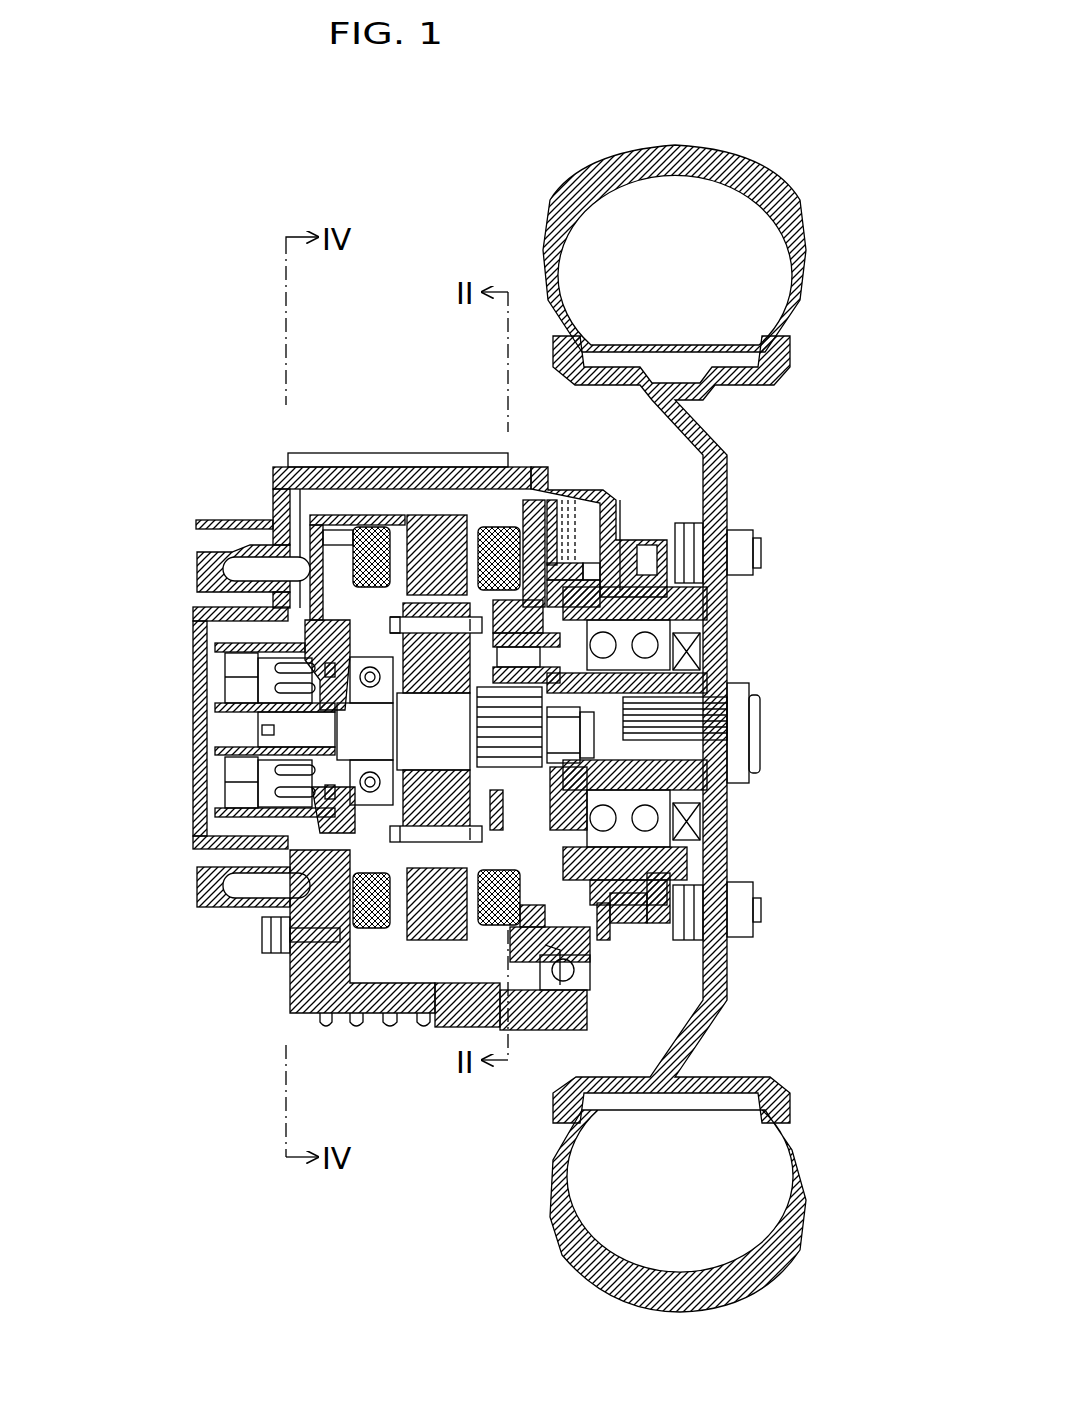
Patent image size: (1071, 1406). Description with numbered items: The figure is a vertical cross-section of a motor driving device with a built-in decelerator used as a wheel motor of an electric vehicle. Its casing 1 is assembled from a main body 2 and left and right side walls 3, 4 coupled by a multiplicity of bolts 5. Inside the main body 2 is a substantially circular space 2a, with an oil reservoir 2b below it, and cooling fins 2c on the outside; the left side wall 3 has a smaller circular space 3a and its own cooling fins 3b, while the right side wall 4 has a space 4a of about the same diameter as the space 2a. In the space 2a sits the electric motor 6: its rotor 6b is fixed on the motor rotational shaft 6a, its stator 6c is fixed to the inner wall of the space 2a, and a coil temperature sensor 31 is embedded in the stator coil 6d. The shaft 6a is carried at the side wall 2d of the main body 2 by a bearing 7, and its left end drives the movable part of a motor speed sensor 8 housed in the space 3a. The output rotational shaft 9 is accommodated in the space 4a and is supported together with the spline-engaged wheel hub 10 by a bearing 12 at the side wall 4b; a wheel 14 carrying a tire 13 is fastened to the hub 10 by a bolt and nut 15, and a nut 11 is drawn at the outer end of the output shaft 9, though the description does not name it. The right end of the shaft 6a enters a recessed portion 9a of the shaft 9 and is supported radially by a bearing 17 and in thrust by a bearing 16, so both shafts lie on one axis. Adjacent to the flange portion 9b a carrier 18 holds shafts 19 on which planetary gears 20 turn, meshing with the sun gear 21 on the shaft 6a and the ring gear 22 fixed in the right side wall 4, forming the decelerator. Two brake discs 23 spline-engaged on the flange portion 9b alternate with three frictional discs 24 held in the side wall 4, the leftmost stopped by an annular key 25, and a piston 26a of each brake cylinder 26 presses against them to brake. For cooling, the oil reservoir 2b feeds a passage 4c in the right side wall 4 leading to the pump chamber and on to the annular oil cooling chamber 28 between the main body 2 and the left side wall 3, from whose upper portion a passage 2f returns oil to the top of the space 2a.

The casing 1 is at (292, 452).
The main body 2 is at (425, 510).
The space 2a is at (280, 594).
The oil reservoir 2b is at (440, 1030).
The cooling fins 2c is at (424, 1030).
The side wall 2d is at (282, 478).
The passage 2f is at (350, 505).
The left side wall 3 is at (272, 505).
The space 3a is at (218, 634).
The cooling fins 3b is at (200, 578).
The right side wall 4 is at (600, 530).
The space 4a is at (590, 545).
The side wall 4b is at (632, 922).
The passage 4c is at (520, 1032).
The bolts 5 is at (270, 940).
The electric motor 6 is at (452, 512).
The motor rotational shaft 6a is at (270, 722).
The rotor 6b is at (398, 822).
The stator 6c is at (432, 940).
The coil 6d is at (372, 930).
The bearing 7 is at (372, 700).
The motor speed sensor 8 is at (226, 786).
The output rotational shaft 9 is at (718, 690).
The recessed portion 9a is at (538, 798).
The flange portion 9b is at (647, 558).
The wheel hub 10 is at (710, 815).
The axle nut 11 is at (740, 740).
The bearing 12 is at (706, 612).
The tire 13 is at (788, 175).
The wheel 14 is at (728, 455).
The bolt and nut 15 is at (760, 535).
The bearing 16 is at (564, 732).
The bearing 17 is at (590, 758).
The carrier 18 is at (480, 930).
The shafts 19 is at (482, 705).
The planetary gears 20 is at (475, 713).
The sun gear 21 is at (482, 745).
The ring gear 22 is at (535, 520).
The brake discs 23 is at (570, 520).
The frictional discs 24 is at (585, 985).
The annular key 25 is at (548, 924).
The brake cylinders 26 is at (628, 925).
The piston 26a is at (632, 960).
The oil cooling chamber 28 is at (238, 905).
The coil temperature sensor 31 is at (402, 550).